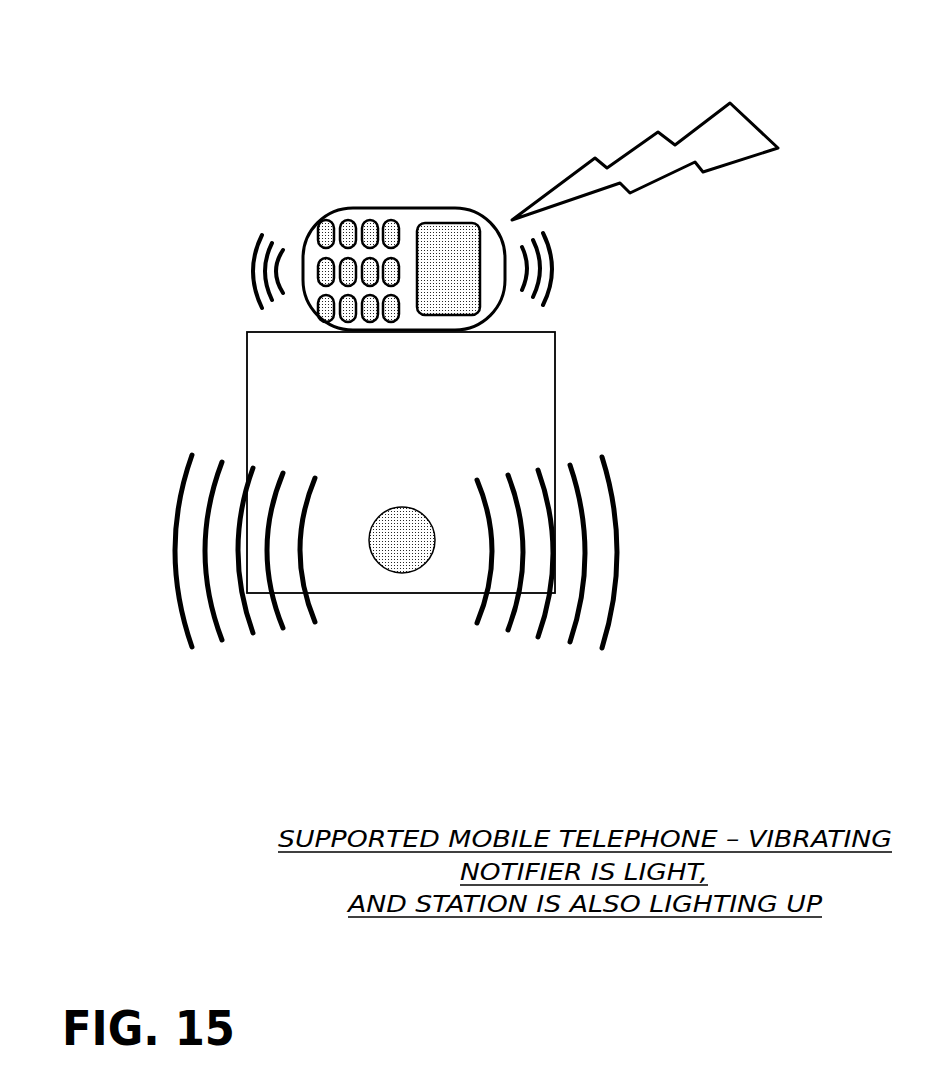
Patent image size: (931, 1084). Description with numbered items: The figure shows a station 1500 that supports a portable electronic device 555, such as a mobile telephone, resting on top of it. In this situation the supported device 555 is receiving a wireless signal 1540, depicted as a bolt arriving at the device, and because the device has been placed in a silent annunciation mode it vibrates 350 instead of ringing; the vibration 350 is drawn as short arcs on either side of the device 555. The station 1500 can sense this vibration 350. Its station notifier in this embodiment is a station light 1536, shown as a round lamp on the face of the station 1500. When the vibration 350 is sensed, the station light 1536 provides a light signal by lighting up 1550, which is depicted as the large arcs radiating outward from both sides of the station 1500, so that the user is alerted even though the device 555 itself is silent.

The wireless signal 1540 is at (728, 100).
The portable electronic device 555 is at (367, 203).
The vibration 350 is at (255, 233).
The station 1500 is at (333, 401).
The station light 1536 is at (399, 507).
The lighting up 1550 is at (492, 657).